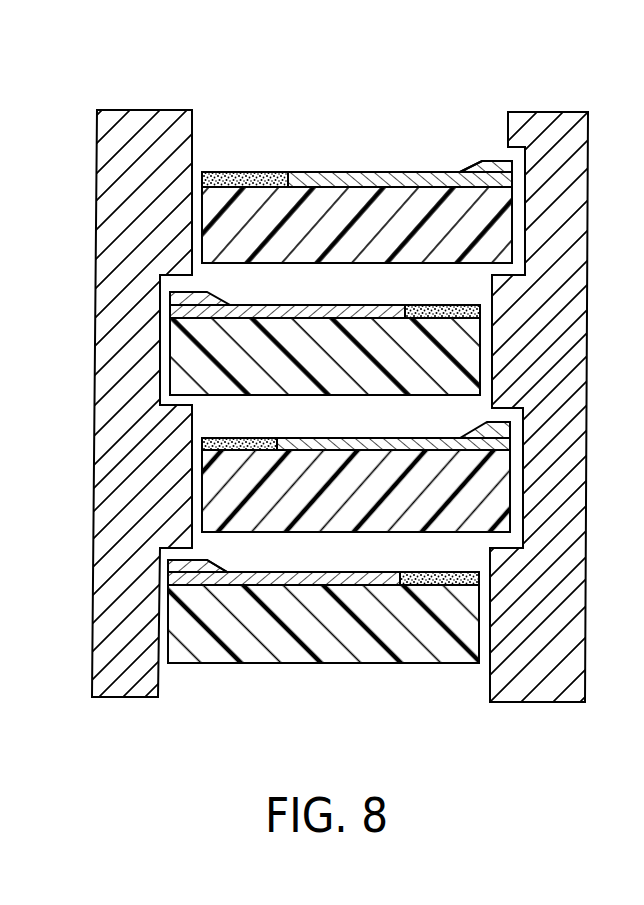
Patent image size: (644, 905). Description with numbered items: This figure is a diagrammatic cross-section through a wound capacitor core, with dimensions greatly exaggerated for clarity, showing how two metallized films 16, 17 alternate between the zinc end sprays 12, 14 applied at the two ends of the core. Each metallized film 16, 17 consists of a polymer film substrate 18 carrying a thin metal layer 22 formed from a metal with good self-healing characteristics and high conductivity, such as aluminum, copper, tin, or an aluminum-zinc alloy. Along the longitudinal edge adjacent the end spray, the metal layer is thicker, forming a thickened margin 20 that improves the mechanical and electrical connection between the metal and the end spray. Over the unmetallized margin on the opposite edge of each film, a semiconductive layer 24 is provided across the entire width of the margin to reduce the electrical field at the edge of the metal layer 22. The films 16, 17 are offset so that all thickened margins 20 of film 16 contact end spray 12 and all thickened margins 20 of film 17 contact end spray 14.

The end spray 12 is at (588, 538).
The end spray 14 is at (92, 493).
The metallized film 16 is at (305, 90).
The metallized film 17 is at (338, 298).
The polymer film substrate 18 is at (372, 235).
The thickened margin 20 is at (490, 162).
The metal layer 22 is at (375, 172).
The semiconductive layer 24 is at (238, 172).